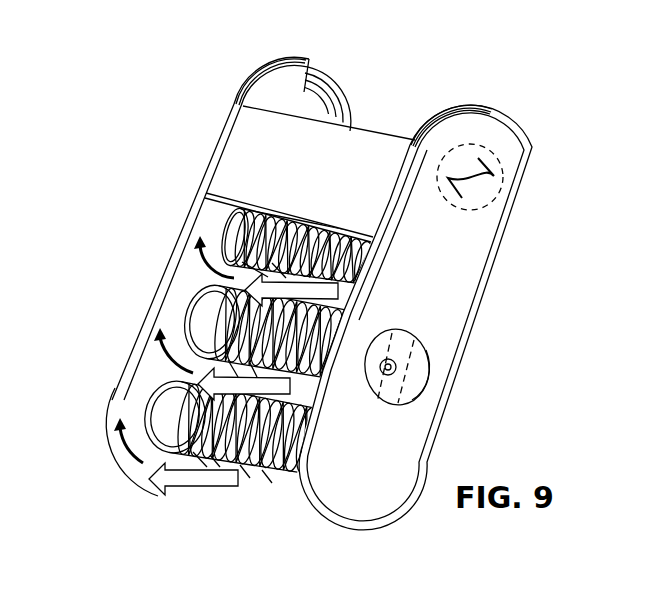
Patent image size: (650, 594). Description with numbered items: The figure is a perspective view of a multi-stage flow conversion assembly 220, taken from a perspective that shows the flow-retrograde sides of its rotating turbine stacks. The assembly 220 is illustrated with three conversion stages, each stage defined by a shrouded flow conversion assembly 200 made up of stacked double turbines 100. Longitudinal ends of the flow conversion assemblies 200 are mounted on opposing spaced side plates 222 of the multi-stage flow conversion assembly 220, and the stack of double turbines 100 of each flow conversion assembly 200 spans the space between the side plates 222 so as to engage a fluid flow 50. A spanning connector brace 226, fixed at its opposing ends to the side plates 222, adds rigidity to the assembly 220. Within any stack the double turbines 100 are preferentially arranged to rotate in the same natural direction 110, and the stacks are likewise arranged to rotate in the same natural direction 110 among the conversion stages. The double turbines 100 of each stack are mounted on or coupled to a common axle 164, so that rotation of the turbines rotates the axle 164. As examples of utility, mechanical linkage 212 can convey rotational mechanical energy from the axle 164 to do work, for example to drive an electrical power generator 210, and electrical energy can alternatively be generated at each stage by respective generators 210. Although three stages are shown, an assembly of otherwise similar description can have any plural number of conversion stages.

The multi-stage flow conversion assembly 220 is at (157, 120).
The side plates 222 is at (293, 72).
The spanning connector brace 226 is at (320, 186).
The electrical power generator 210 is at (502, 158).
The shrouded flow conversion assembly 200 is at (213, 210).
The fluid flow 50 is at (187, 490).
The natural direction of rotation 110 is at (132, 450).
The double turbine 100 is at (285, 485).
The mechanical linkage 212 is at (412, 378).
The axle 164 is at (388, 375).